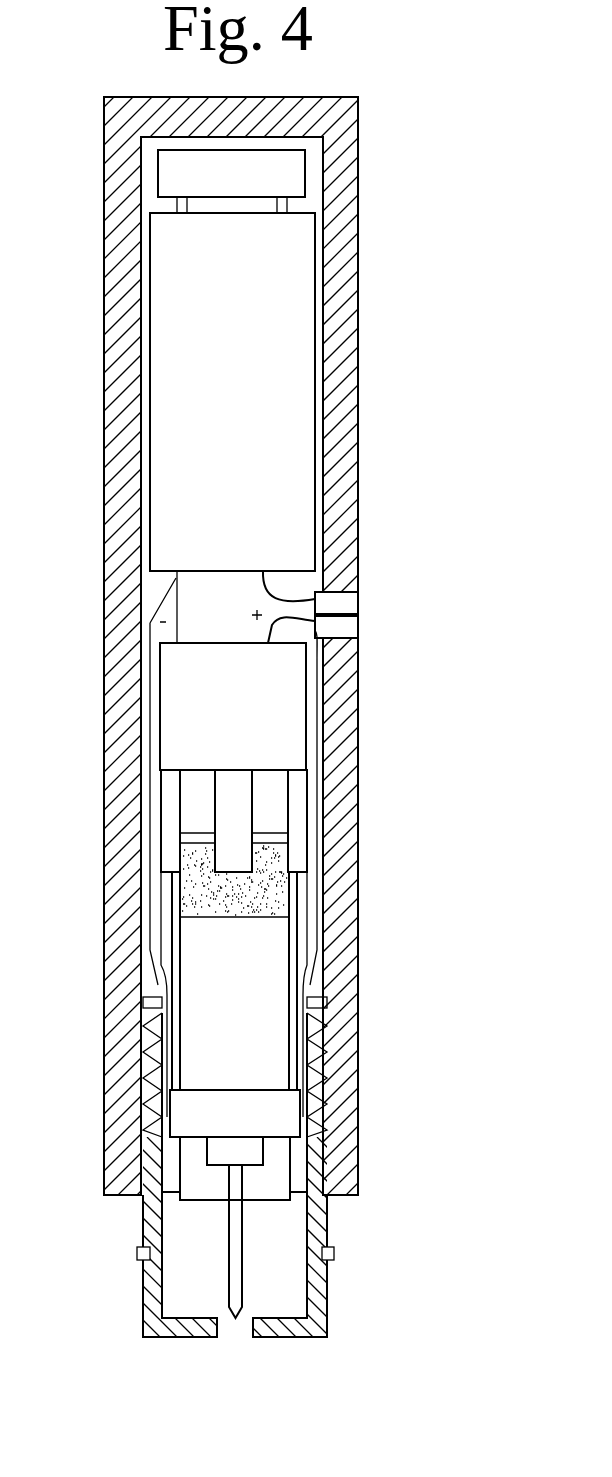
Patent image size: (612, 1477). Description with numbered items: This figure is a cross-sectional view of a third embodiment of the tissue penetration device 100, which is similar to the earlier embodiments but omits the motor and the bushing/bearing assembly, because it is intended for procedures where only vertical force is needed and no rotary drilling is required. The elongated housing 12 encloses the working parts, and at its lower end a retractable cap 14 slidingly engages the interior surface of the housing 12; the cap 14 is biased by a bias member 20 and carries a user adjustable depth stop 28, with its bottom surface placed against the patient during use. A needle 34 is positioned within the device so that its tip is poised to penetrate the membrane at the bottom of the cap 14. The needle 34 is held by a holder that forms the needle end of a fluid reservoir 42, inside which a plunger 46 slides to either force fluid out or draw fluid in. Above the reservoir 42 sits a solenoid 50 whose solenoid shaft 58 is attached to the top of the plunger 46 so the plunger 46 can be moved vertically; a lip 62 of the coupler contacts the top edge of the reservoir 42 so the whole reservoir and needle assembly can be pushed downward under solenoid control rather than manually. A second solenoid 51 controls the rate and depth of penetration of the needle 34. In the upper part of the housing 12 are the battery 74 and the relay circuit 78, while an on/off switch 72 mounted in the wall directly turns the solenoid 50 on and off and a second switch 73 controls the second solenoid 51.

The tissue penetration device 100 is at (267, 718).
The housing 12 is at (358, 1117).
The retractable cap 14 is at (267, 1167).
The bias member 20 is at (313, 1057).
The user adjustable depth stop 28 is at (272, 1276).
The needle 34 is at (237, 1283).
The fluid reservoir 42 is at (249, 1015).
The plunger 46 is at (252, 897).
The solenoid 50 is at (248, 718).
The second solenoid 51 is at (249, 1124).
The solenoid shaft 58 is at (233, 820).
The lip 62 is at (299, 820).
The on/off switch 72 is at (333, 606).
The second switch 73 is at (340, 624).
The battery 74 is at (248, 405).
The relay circuit 78 is at (268, 168).